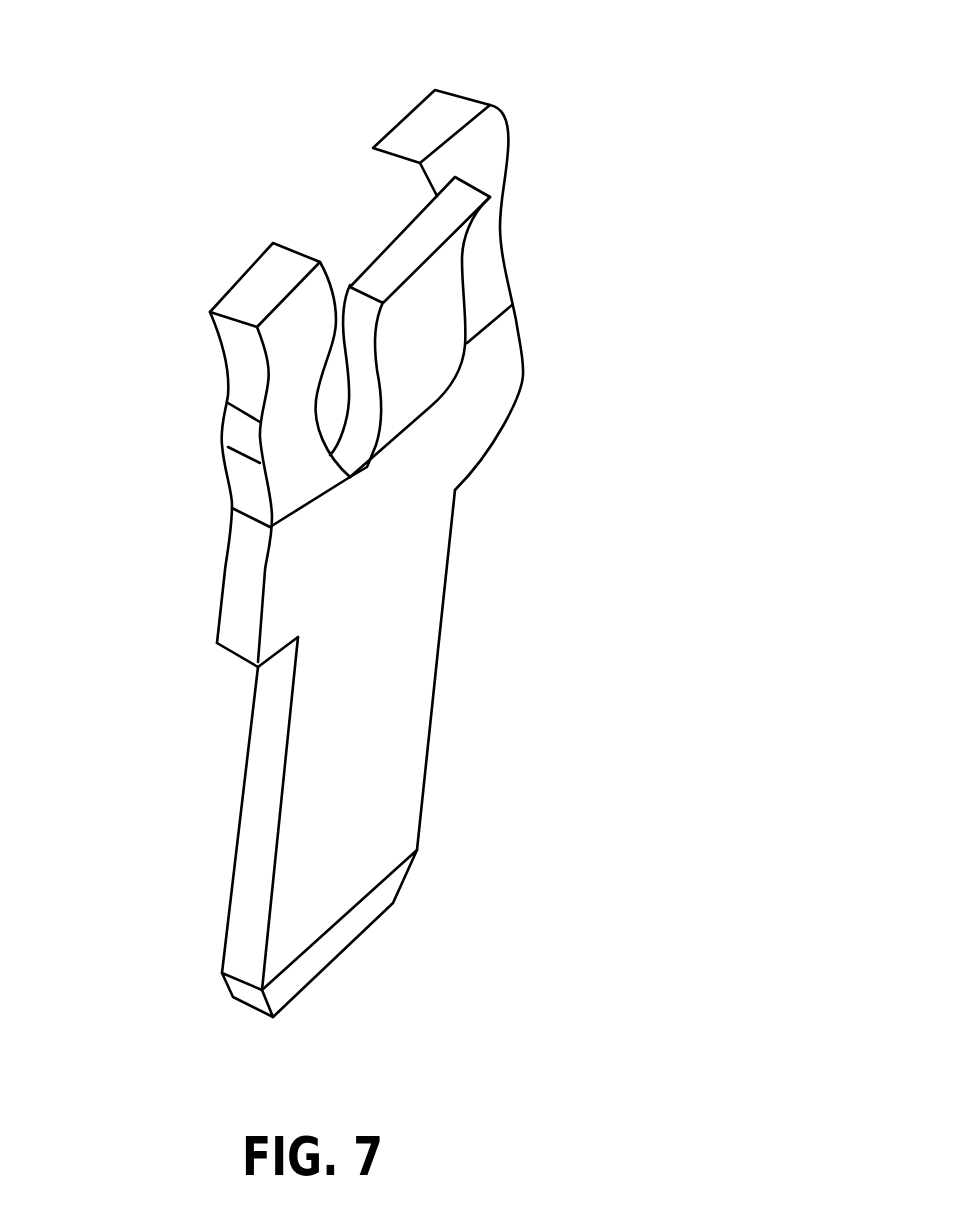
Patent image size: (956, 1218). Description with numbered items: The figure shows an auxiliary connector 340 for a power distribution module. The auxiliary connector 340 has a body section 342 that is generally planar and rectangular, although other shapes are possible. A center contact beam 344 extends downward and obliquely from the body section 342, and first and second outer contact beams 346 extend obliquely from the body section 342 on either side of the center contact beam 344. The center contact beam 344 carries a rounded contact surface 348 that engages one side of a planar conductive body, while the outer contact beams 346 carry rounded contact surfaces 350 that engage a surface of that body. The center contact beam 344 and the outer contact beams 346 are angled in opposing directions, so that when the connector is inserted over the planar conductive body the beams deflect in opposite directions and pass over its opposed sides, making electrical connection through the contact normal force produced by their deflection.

The auxiliary connector 340 is at (452, 513).
The body section 342 is at (440, 637).
The center contact beam 344 is at (397, 267).
The outer contact beams 346 is at (430, 123).
The rounded contact surface 348 is at (342, 318).
The rounded contact surfaces 350 is at (505, 237).